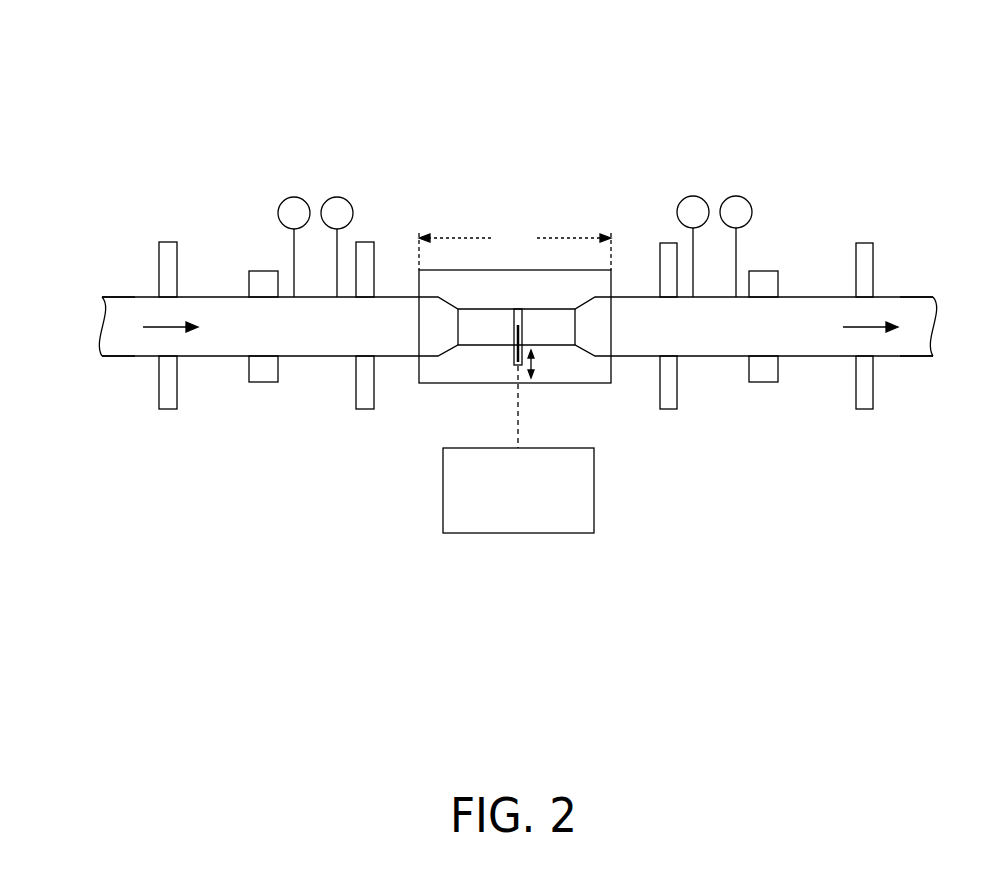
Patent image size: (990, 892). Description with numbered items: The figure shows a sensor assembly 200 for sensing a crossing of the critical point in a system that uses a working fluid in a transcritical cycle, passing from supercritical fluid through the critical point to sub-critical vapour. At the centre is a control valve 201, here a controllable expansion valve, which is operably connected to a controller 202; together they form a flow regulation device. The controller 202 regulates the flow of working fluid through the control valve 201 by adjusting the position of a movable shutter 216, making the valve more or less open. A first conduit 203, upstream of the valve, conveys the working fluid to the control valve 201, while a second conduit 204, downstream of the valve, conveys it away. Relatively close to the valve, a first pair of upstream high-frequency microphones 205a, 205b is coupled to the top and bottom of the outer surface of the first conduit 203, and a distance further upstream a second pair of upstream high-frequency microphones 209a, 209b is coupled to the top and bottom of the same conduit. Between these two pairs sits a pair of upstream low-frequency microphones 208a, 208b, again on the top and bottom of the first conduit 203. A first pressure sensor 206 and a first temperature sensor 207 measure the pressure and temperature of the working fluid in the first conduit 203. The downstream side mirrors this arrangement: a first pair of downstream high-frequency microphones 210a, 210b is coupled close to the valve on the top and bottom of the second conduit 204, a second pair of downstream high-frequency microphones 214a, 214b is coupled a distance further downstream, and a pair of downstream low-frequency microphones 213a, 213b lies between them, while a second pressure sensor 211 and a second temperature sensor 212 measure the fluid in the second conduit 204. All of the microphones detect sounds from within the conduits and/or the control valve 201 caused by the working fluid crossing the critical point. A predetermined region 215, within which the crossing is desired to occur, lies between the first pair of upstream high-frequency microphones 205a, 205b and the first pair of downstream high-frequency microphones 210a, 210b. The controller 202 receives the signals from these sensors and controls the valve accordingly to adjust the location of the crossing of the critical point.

The sensor assembly 200 is at (144, 84).
The control valve 201 is at (593, 374).
The controller 202 is at (443, 515).
The first conduit 203 is at (118, 297).
The second conduit 204 is at (924, 298).
The upstream high-frequency microphone 205a is at (372, 243).
The upstream high-frequency microphone 205b is at (357, 400).
The first pressure sensor 206 is at (281, 202).
The first temperature sensor 207 is at (348, 200).
The upstream low-frequency microphone 208a is at (250, 271).
The upstream low-frequency microphone 208b is at (249, 385).
The upstream high-frequency microphone 209a is at (160, 242).
The upstream high-frequency microphone 209b is at (160, 400).
The downstream high-frequency microphone 210a is at (662, 243).
The downstream high-frequency microphone 210b is at (677, 405).
The second pressure sensor 211 is at (680, 202).
The second temperature sensor 212 is at (750, 200).
The downstream low-frequency microphone 213a is at (772, 271).
The downstream low-frequency microphone 213b is at (778, 385).
The downstream high-frequency microphone 214a is at (870, 243).
The downstream high-frequency microphone 214b is at (873, 405).
The predetermined region 215 is at (515, 248).
The movable shutter 216 is at (512, 355).